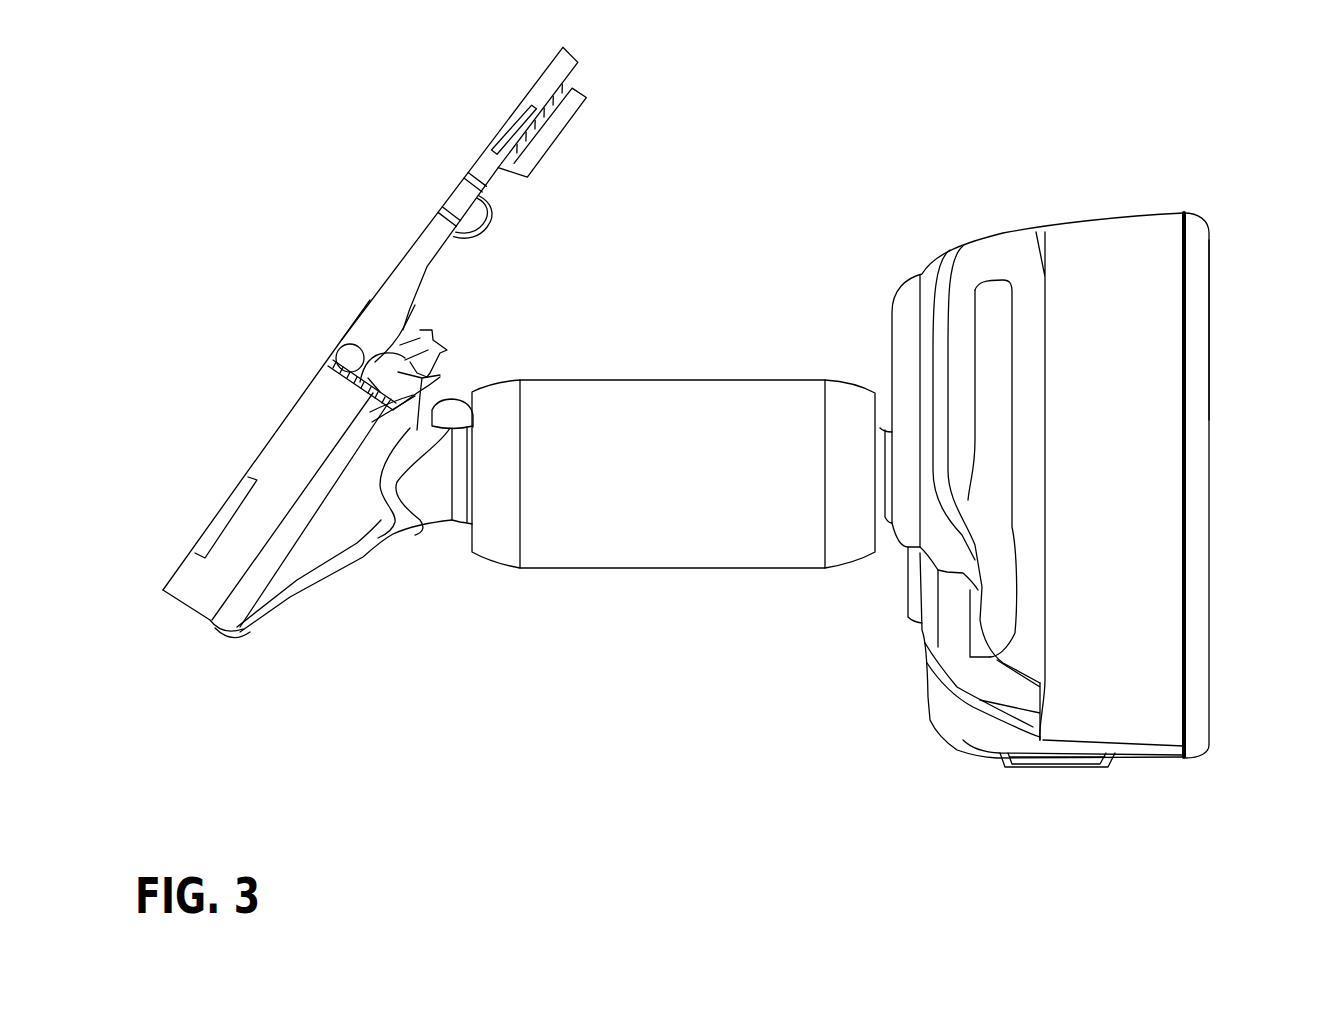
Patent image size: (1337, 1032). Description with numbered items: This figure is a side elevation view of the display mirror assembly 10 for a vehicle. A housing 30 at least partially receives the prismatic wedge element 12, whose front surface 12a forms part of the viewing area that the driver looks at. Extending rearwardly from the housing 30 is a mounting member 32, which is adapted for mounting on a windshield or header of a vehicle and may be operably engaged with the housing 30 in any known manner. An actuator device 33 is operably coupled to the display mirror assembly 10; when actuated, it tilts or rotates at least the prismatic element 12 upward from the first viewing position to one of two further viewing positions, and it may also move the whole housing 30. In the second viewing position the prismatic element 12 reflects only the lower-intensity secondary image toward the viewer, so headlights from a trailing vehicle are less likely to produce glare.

The display mirror assembly 10 is at (1161, 90).
The prismatic wedge element 12 is at (1209, 247).
The front surface 12a is at (1208, 416).
The housing 30 is at (980, 242).
The mounting member 32 is at (677, 406).
The actuator device 33 is at (1066, 764).